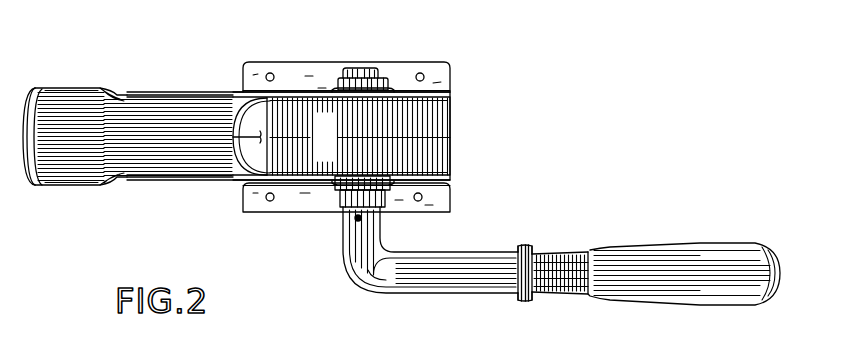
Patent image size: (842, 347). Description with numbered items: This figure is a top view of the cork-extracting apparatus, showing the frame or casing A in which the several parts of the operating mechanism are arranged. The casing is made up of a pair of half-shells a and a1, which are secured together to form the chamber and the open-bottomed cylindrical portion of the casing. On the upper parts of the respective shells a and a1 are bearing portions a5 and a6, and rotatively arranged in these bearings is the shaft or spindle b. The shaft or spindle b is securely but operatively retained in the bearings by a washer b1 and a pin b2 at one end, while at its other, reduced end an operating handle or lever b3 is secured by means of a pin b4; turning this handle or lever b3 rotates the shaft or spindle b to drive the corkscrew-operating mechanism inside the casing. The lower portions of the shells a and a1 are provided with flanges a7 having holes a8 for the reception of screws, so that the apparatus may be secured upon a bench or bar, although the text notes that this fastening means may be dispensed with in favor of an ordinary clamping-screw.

The frame or casing A is at (277, 147).
The half-shell a is at (341, 136).
The half-shell a1 is at (66, 186).
The bearing portion a5 is at (391, 92).
The bearing portion a6 is at (334, 187).
The flange a7 is at (463, 197).
The hole a8 is at (272, 73).
The shaft or spindle b is at (378, 77).
The washer b1 is at (385, 88).
The pin b2 is at (362, 76).
The operating handle or lever b3 is at (556, 252).
The pin b4 is at (353, 221).